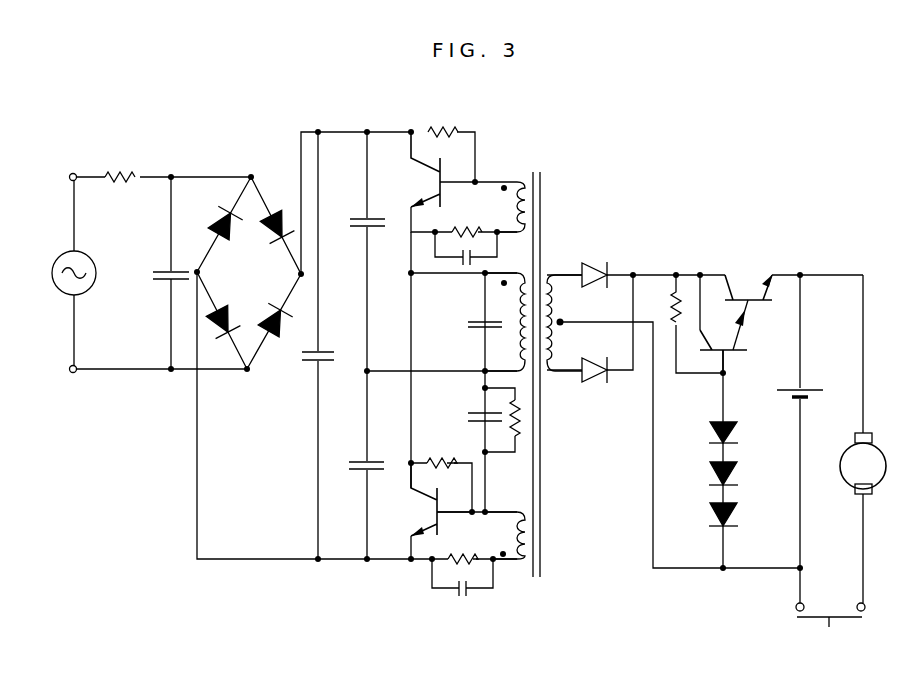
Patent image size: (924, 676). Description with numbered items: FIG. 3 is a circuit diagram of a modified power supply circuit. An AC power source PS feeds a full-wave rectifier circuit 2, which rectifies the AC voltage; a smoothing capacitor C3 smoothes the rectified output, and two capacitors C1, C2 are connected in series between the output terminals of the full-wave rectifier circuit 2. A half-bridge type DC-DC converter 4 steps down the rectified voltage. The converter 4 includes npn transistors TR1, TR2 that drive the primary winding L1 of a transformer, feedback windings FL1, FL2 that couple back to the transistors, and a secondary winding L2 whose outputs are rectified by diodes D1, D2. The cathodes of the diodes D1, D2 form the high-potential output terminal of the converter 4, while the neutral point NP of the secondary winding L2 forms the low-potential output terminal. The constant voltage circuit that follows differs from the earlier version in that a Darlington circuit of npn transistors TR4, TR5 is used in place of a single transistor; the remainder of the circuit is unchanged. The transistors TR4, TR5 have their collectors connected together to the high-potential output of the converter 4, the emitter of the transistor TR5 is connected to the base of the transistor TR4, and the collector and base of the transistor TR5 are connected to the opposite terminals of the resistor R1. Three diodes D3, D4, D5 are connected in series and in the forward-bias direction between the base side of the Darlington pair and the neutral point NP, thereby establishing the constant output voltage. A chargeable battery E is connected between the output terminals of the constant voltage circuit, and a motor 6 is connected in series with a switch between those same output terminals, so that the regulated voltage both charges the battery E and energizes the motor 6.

The full-wave rectifier circuit 2 is at (232, 185).
The AC power source PS is at (92, 288).
The capacitor C1 is at (350, 222).
The capacitor C2 is at (349, 468).
The smoothing capacitor C3 is at (301, 359).
The npn transistor TR1 is at (430, 194).
The npn transistor TR2 is at (432, 517).
The feedback winding FL1 is at (520, 178).
The feedback winding FL2 is at (512, 565).
The primary winding L1 is at (501, 301).
The secondary winding L2 is at (558, 354).
The half-bridge type DC-DC converter 4 is at (544, 158).
The neutral point NP is at (561, 322).
The diode D1 is at (591, 262).
The diode D2 is at (596, 385).
The resistor R1 is at (672, 313).
The npn transistor TR4 is at (739, 290).
The npn transistor TR5 is at (739, 347).
The diode D3 is at (708, 430).
The diode D4 is at (710, 475).
The diode D5 is at (710, 516).
The chargeable battery E is at (807, 389).
The motor 6 is at (888, 474).